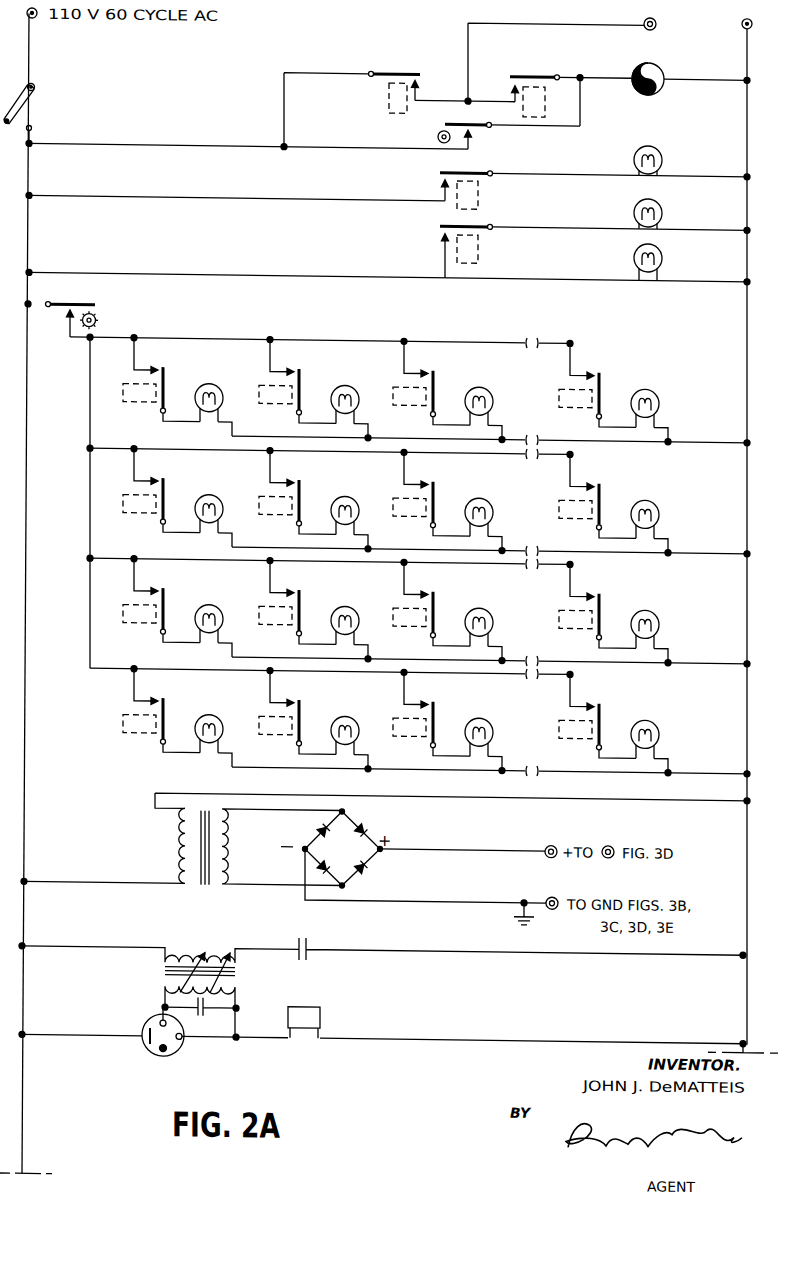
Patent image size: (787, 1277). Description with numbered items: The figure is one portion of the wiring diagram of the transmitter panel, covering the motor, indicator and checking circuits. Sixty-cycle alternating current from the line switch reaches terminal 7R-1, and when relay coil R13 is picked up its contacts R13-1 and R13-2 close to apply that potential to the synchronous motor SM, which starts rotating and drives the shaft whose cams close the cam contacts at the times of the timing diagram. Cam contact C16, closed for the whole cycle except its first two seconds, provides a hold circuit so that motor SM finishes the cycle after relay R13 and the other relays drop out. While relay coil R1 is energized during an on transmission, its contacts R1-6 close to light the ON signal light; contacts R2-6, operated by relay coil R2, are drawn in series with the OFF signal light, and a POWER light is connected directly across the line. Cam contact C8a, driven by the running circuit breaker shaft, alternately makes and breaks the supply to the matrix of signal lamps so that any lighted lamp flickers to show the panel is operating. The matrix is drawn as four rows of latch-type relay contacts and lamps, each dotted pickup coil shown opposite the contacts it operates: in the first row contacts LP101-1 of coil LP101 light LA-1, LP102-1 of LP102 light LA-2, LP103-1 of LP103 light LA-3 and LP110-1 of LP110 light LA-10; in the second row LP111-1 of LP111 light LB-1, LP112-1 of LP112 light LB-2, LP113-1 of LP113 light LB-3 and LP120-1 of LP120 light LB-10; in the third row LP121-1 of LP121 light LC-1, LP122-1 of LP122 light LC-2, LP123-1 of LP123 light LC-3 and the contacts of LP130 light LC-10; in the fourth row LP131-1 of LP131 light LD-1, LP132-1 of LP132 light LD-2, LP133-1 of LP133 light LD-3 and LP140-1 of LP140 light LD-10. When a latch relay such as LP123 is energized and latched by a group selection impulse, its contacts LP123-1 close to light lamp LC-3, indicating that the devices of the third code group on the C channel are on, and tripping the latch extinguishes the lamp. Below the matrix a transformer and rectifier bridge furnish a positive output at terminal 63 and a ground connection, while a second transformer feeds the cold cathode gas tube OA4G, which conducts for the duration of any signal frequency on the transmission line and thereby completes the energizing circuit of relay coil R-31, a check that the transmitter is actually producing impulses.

The terminal 7R-1 is at (672, 25).
The first set of contacts of relay R13 R13-1 is at (427, 76).
The operating coil of relay R13 is at (389, 95).
The second set of contacts of relay R13 R13-2 is at (502, 77).
The synchronous motor SM is at (691, 69).
The cam contact C16 is at (440, 127).
The sixth set of contacts of relay R1 R1-6 is at (437, 166).
The operating coil of relay R1 is at (478, 202).
The relay R2 contact 6 R2-6 is at (438, 226).
The relay R2 coil R2 is at (487, 251).
The on signal light ON is at (648, 151).
The OFF indicator lamp OFF is at (648, 206).
The POWER indicator lamp POWER is at (618, 262).
The cam contact C8A C8a is at (97, 320).
The first set of contacts of latch-type relay 101 LP101-1 is at (162, 367).
The pickup coil of latch-type relay 101 LP101 is at (123, 395).
The indicating lamp LA-1 is at (213, 401).
The first set of contacts of latch-type relay 102 LP102-1 is at (298, 367).
The pickup coil of latch-type relay 102 LP102 is at (259, 395).
The indicating lamp LA-2 is at (349, 402).
The first set of contacts of latch-type relay 103 LP103-1 is at (432, 367).
The pickup coil of latch-type relay 103 LP103 is at (393, 395).
The indicating lamp LA-3 is at (483, 404).
The first set of contacts of latch-type relay 110 LP110-1 is at (598, 367).
The pickup coil of latch-type relay 110 LP110 is at (559, 395).
The indicating lamp LA-10 is at (647, 406).
The first set of contacts of latch-type relay 111 LP111-1 is at (162, 478).
The pickup coil of latch-type relay 111 LP111 is at (123, 506).
The indicating lamp LB-1 is at (213, 512).
The first set of contacts of latch-type relay 112 LP112-1 is at (298, 478).
The pickup coil of latch-type relay 112 LP112 is at (259, 506).
The indicating lamp LB-2 is at (349, 513).
The first set of contacts of latch-type relay 113 LP113-1 is at (432, 478).
The pickup coil of latch-type relay 113 LP113 is at (393, 506).
The indicating lamp LB-3 is at (483, 515).
The first set of contacts of latch-type relay 120 LP120-1 is at (598, 478).
The pickup coil of latch-type relay 120 LP120 is at (559, 506).
The indicating lamp LB-10 is at (647, 517).
The first set of contacts of latch-type relay 121 LP121-1 is at (162, 588).
The pickup coil of latch-type relay 121 LP121 is at (123, 616).
The indicating lamp LC-1 is at (213, 622).
The first set of contacts of latch-type relay 122 LP122-1 is at (298, 588).
The pickup coil of latch-type relay 122 LP122 is at (259, 616).
The indicating lamp LC-2 is at (349, 623).
The first set of contacts of latch-type relay 123 LP123-1 is at (432, 588).
The pickup coil of latch-type relay 123 LP123 is at (393, 616).
The indicating lamp LC-3 is at (483, 625).
The pickup coil and contacts of latch-type relay 130 LP130 is at (598, 588).
The indicating lamp LC-10 is at (647, 627).
The first set of contacts of latch-type relay 131 LP131-1 is at (162, 698).
The pickup coil of latch-type relay 131 LP131 is at (123, 726).
The indicating lamp LD-1 is at (213, 732).
The first set of contacts of latch-type relay 132 LP132-1 is at (298, 698).
The pickup coil of latch-type relay 132 LP132 is at (259, 726).
The indicating lamp LD-2 is at (349, 733).
The first set of contacts of latch-type relay 133 LP133-1 is at (432, 698).
The pickup coil of latch-type relay 133 LP133 is at (393, 726).
The indicating lamp LD-3 is at (483, 735).
The first set of contacts of latch-type relay 140 LP140-1 is at (598, 698).
The pickup coil of latch-type relay 140 LP140 is at (559, 726).
The indicating lamp LD-10 is at (647, 737).
The terminal 63 to FIG. 3D 63 is at (618, 838).
The cold cathode gas tube OA4G is at (162, 1043).
The operating coil of relay R31 R-31 is at (304, 1012).